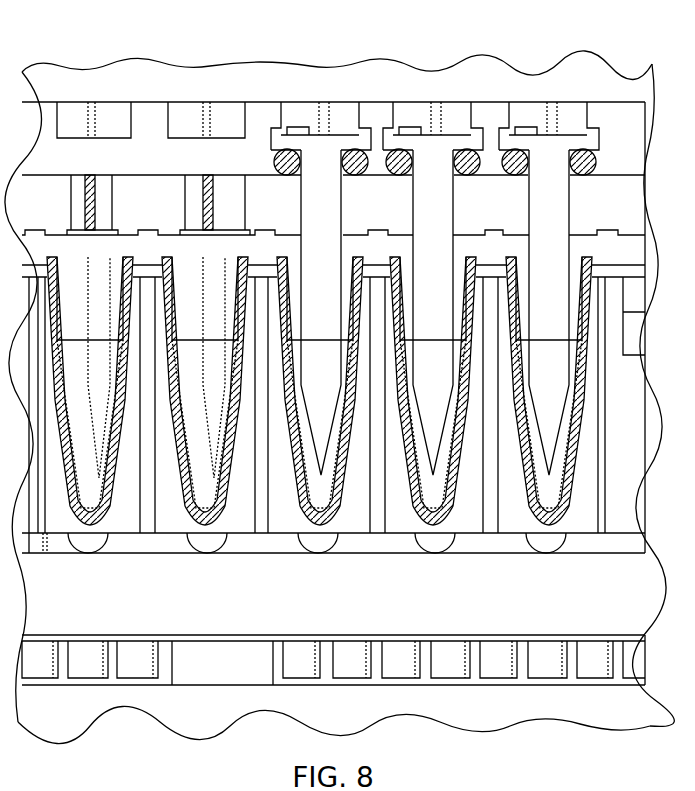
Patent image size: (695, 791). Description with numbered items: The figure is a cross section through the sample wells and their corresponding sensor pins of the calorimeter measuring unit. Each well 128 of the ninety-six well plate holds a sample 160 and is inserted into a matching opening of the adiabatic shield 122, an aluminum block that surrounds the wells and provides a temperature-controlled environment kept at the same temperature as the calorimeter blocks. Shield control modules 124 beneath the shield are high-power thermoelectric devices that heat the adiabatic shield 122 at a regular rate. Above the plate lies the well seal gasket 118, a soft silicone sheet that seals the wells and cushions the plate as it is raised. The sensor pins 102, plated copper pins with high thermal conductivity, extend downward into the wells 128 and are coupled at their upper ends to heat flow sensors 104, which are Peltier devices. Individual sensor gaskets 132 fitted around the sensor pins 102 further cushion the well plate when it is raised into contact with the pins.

The sensor pin 102 is at (536, 206).
The heat flow sensor 104 is at (570, 113).
The well seal gasket 118 is at (605, 195).
The adiabatic shield 122 is at (627, 523).
The shield control module 124 is at (553, 652).
The well 128 is at (591, 375).
The sensor gasket 132 is at (286, 150).
The sample 160 is at (565, 488).